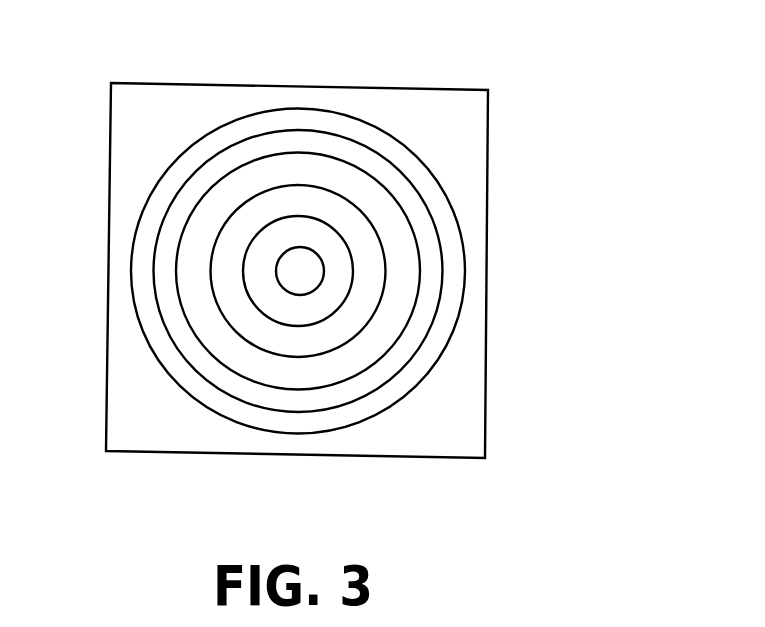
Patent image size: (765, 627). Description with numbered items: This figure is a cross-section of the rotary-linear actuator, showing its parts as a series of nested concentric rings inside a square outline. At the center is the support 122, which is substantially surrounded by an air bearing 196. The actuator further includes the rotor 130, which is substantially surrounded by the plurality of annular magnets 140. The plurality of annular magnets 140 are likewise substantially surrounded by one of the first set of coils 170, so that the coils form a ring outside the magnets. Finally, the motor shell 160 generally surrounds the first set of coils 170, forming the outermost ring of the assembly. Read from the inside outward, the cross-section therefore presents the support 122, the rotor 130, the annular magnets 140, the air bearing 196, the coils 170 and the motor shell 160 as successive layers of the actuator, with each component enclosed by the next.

The support 122 is at (425, 332).
The rotor 130 is at (388, 183).
The plurality of annular magnets 140 is at (404, 238).
The air bearing 196 is at (389, 271).
The first set of coil(s) 170 is at (379, 271).
The motor shell 160 is at (364, 271).